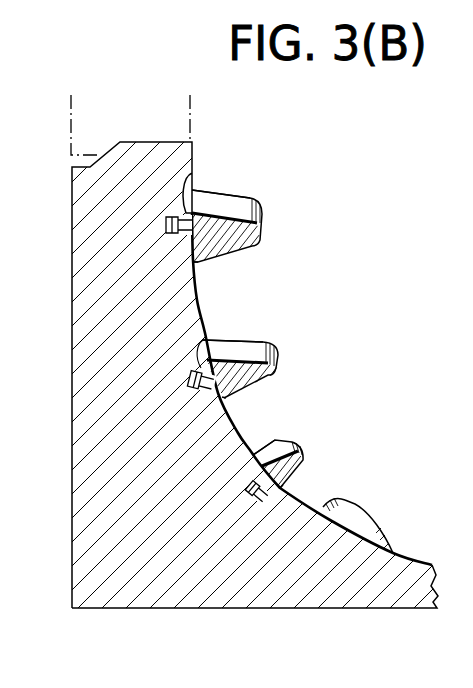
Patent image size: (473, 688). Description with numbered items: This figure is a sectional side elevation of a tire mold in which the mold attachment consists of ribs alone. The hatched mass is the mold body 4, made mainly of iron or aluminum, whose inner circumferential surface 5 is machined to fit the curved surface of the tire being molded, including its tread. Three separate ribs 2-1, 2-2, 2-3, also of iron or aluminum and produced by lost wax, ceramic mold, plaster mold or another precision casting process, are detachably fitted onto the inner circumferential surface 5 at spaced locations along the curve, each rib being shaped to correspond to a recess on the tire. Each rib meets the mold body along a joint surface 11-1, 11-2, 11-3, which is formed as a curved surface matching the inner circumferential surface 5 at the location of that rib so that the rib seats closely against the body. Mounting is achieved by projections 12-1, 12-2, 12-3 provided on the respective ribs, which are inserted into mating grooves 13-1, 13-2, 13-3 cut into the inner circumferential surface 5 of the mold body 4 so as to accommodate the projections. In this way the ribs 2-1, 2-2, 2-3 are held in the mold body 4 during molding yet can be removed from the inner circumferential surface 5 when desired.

The mold body 4 is at (72, 318).
The inner circumferential surface 5 is at (200, 305).
The rib 2-1 is at (263, 215).
The rib 2-2 is at (279, 354).
The rib 2-3 is at (297, 440).
The joint surface 11-1 is at (190, 250).
The joint surface 11-2 is at (214, 389).
The joint surface 11-3 is at (275, 488).
The projection 12-1 is at (192, 191).
The projection 12-2 is at (213, 327).
The projection 12-3 is at (259, 469).
The mating groove 13-1 is at (166, 228).
The mating groove 13-2 is at (189, 382).
The mating groove 13-3 is at (253, 497).